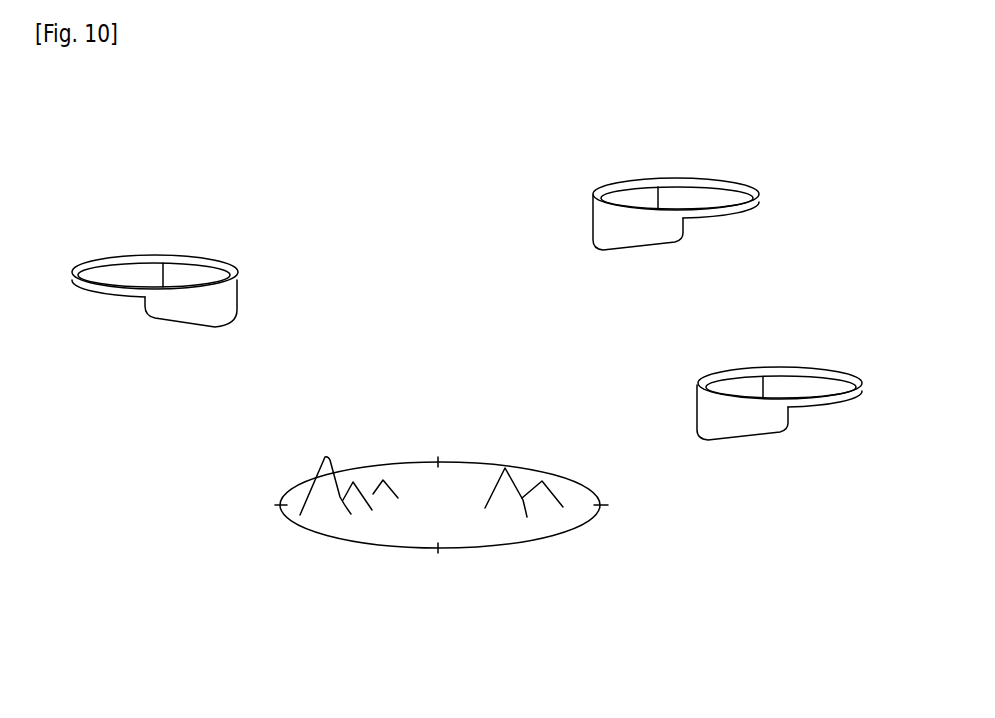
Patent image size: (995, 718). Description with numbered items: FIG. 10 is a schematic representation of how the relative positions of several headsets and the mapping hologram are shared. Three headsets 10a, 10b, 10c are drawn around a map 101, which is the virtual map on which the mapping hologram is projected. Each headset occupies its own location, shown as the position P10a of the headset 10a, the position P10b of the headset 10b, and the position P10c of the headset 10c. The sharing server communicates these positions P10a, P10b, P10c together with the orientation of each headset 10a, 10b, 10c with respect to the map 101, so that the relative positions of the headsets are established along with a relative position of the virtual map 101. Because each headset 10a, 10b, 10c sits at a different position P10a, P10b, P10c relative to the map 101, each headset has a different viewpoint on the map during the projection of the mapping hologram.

The position of headset P10a is at (700, 178).
The position of headset P10b is at (130, 254).
The position of headset P10c is at (808, 367).
The headset 10a is at (722, 239).
The headset 10b is at (261, 291).
The headset 10c is at (771, 464).
The map 101 is at (390, 465).